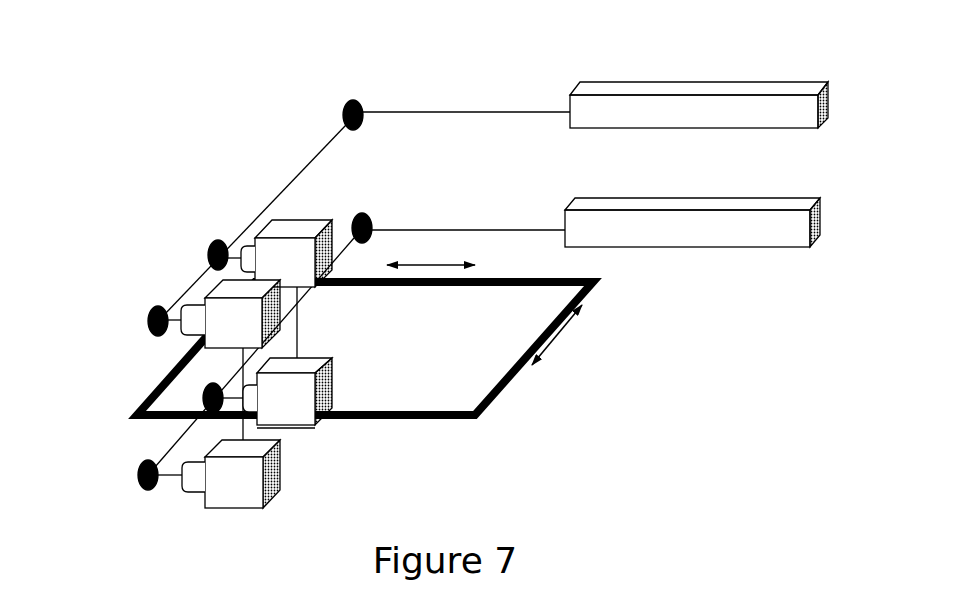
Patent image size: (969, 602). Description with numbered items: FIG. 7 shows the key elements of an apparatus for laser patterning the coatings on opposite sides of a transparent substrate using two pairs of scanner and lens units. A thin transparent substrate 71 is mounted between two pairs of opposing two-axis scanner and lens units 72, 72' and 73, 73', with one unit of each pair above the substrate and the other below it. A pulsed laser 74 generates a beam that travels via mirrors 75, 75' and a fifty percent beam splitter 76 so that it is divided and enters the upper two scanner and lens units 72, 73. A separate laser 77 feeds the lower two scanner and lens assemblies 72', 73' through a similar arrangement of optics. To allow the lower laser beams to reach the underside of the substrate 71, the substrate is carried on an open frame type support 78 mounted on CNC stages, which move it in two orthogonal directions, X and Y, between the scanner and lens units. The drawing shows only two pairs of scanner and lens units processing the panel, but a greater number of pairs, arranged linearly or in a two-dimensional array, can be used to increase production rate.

The thin transparent substrate 71 is at (482, 375).
The scanner and lens unit 72 is at (172, 360).
The scanner and lens unit 72' is at (246, 483).
The scanner and lens unit 73 is at (268, 246).
The scanner and lens unit 73' is at (319, 423).
The pulsed laser 74 is at (632, 107).
The mirror 75 is at (433, 84).
The mirror 75' is at (94, 313).
The 50% beam splitter 76 is at (210, 242).
The separate laser 77 is at (662, 232).
The open frame type support 78 is at (477, 420).